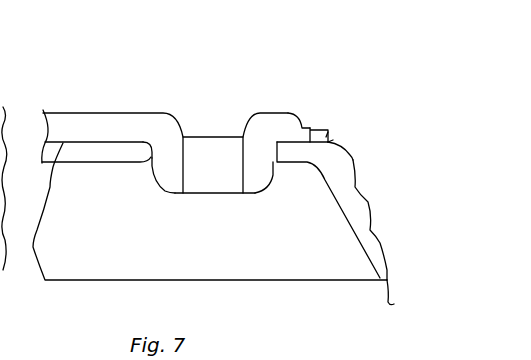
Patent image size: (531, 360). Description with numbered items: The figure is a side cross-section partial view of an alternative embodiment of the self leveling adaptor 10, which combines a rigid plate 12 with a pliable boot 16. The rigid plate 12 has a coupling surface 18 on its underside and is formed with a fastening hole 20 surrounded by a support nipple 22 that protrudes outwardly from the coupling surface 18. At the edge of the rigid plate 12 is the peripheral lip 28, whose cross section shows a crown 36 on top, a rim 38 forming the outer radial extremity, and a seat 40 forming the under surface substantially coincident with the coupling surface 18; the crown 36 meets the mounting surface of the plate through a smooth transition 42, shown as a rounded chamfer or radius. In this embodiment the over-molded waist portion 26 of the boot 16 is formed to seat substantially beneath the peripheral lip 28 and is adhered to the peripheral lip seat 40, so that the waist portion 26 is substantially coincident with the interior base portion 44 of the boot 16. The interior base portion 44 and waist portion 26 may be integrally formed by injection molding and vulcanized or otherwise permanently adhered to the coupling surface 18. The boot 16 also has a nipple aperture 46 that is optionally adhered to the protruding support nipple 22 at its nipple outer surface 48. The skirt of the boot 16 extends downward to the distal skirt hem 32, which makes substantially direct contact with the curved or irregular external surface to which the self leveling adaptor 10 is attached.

The self leveling adaptor 10 is at (52, 72).
The rigid plate 12 is at (58, 113).
The pliable boot 16 is at (367, 207).
The coupling surface 18 is at (55, 183).
The fastening hole 20 is at (201, 122).
The support nipple 22 is at (178, 194).
The waist portion 26 is at (353, 156).
The peripheral lip 28 is at (317, 137).
The skirt hem 32 is at (404, 298).
The peripheral lip crown 36 is at (327, 132).
The rim 38 is at (334, 137).
The peripheral lip seat 40 is at (305, 143).
The transition 42 is at (303, 120).
The interior base portion 44 is at (114, 141).
The nipple aperture 46 is at (150, 168).
The nipple outer surface 48 is at (150, 156).